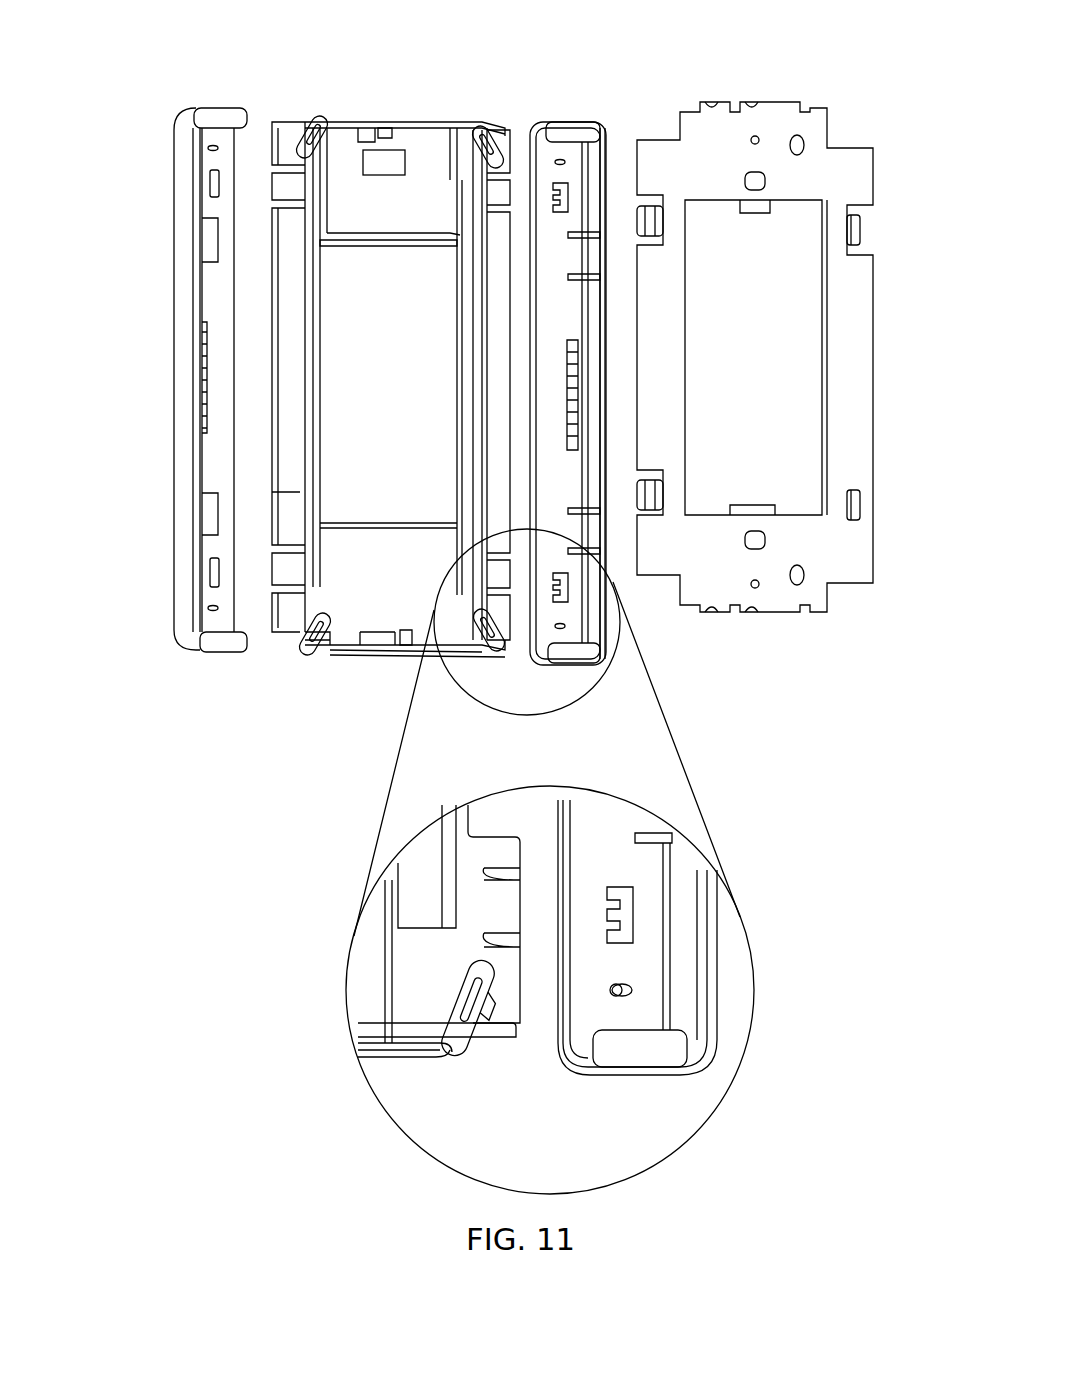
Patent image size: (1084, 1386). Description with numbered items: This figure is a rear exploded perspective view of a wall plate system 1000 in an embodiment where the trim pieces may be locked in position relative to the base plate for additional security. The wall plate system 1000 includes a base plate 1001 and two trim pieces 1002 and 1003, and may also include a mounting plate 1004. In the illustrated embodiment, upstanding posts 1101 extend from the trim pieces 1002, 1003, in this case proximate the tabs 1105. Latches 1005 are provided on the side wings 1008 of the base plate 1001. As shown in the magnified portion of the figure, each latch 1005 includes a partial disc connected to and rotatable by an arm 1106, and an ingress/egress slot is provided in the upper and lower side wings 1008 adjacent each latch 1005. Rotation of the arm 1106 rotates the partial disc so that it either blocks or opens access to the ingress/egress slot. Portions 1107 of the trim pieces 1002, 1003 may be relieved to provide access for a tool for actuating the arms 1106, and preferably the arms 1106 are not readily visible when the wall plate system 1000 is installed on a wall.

The wall plate system 1000 is at (170, 64).
The base plate 1001 is at (420, 122).
The trim piece 1002 is at (582, 120).
The trim piece 1003 is at (216, 108).
The mounting plate 1004 is at (858, 582).
The latch 1005 is at (318, 118).
The side wing 1008 is at (432, 950).
The upstanding post 1101 is at (208, 149).
The tab 1105 is at (210, 185).
The arm 1106 is at (450, 1020).
The relieved portion 1107 is at (650, 1050).